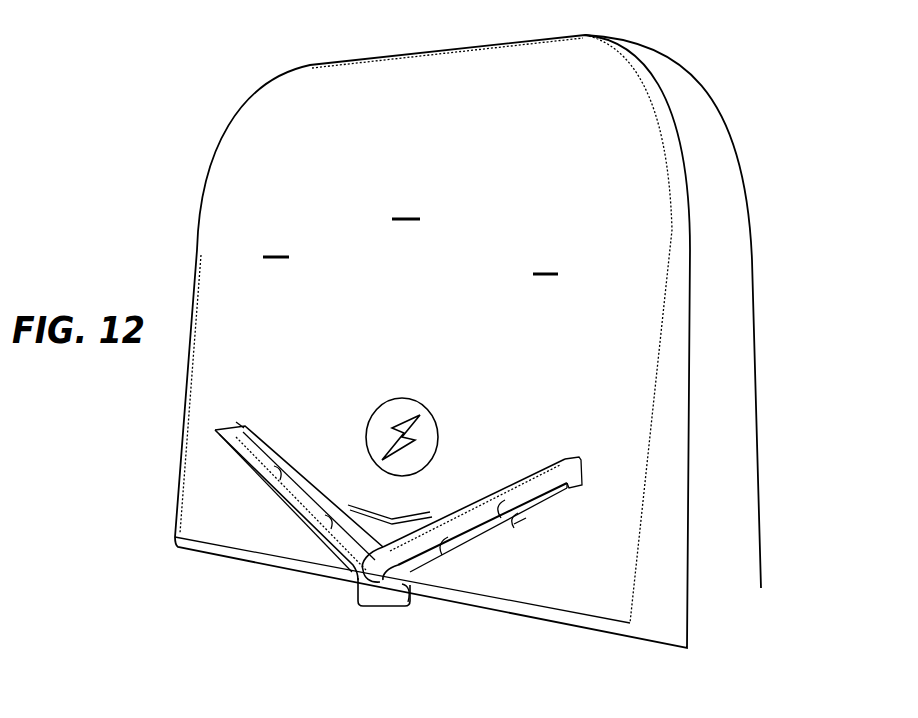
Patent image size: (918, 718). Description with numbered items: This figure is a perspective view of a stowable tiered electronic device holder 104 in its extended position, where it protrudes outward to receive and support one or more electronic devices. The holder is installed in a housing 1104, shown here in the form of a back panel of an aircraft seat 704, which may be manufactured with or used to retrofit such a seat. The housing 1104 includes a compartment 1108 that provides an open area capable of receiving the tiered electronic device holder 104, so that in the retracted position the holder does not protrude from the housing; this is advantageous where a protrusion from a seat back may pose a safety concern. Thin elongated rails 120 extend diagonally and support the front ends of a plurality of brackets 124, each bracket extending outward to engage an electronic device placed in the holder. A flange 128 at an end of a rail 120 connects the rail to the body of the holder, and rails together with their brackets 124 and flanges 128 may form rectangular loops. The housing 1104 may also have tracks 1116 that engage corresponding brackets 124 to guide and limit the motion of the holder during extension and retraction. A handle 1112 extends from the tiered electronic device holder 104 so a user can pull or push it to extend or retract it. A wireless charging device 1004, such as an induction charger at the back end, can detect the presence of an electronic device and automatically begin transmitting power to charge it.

The seat 704 is at (699, 88).
The housing 1104 is at (446, 190).
The wireless charging device 1004 is at (398, 397).
The tiered electronic device holder 104 is at (310, 445).
The rail 120 is at (300, 497).
The bracket 124 is at (251, 483).
The compartment 1108 is at (600, 458).
The flange 128 is at (566, 486).
The track 1116 is at (518, 525).
The handle 1112 is at (388, 610).